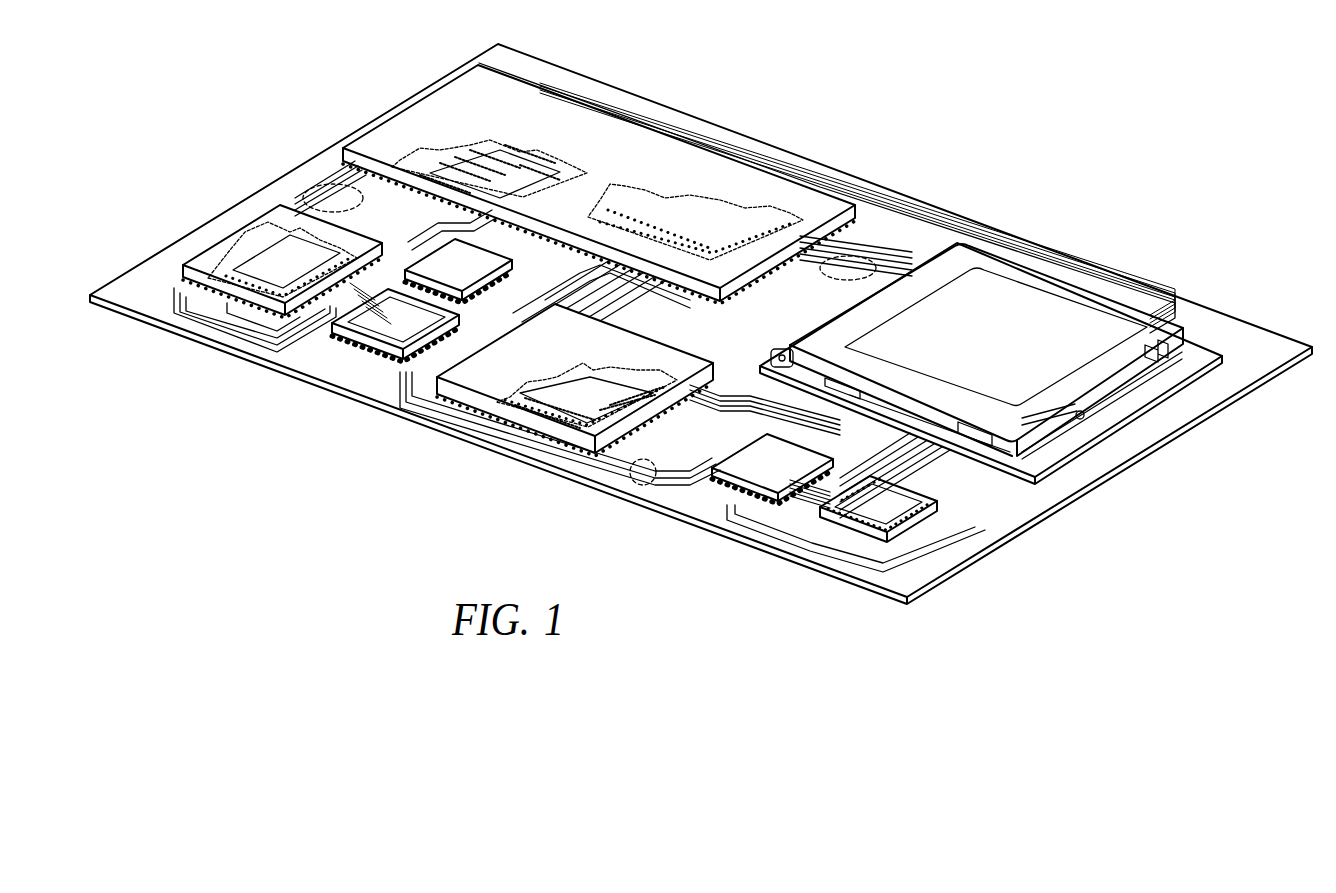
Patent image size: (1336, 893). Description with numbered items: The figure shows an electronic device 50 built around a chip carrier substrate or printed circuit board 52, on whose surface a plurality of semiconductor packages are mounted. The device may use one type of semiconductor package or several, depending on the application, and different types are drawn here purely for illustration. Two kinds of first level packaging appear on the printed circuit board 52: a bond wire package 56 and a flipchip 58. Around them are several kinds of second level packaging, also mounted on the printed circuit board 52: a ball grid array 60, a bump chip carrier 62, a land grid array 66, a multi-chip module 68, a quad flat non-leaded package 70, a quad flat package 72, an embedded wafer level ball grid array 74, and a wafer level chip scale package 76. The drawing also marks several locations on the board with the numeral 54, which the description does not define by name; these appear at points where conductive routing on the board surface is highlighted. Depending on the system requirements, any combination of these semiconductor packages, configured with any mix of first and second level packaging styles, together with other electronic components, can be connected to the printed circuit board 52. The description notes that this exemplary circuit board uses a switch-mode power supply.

The electronic device 50 is at (1123, 499).
The printed circuit board 52 is at (968, 562).
The conductive traces 54 is at (316, 185).
The bond wire package 56 is at (585, 386).
The flipchip 58 is at (265, 255).
The ball grid array (BGA) 60 is at (272, 239).
The bump chip carrier (BCC) 62 is at (575, 396).
The land grid array (LGA) 66 is at (1027, 308).
The multi-chip module (MCM) 68 is at (668, 152).
The quad flat non-leaded package (QFN) 70 is at (855, 530).
The quad flat package 72 is at (740, 460).
The embedded wafer level ball grid array (eWLB) 74 is at (373, 333).
The wafer level chip scale package (WLCSP) 76 is at (468, 260).